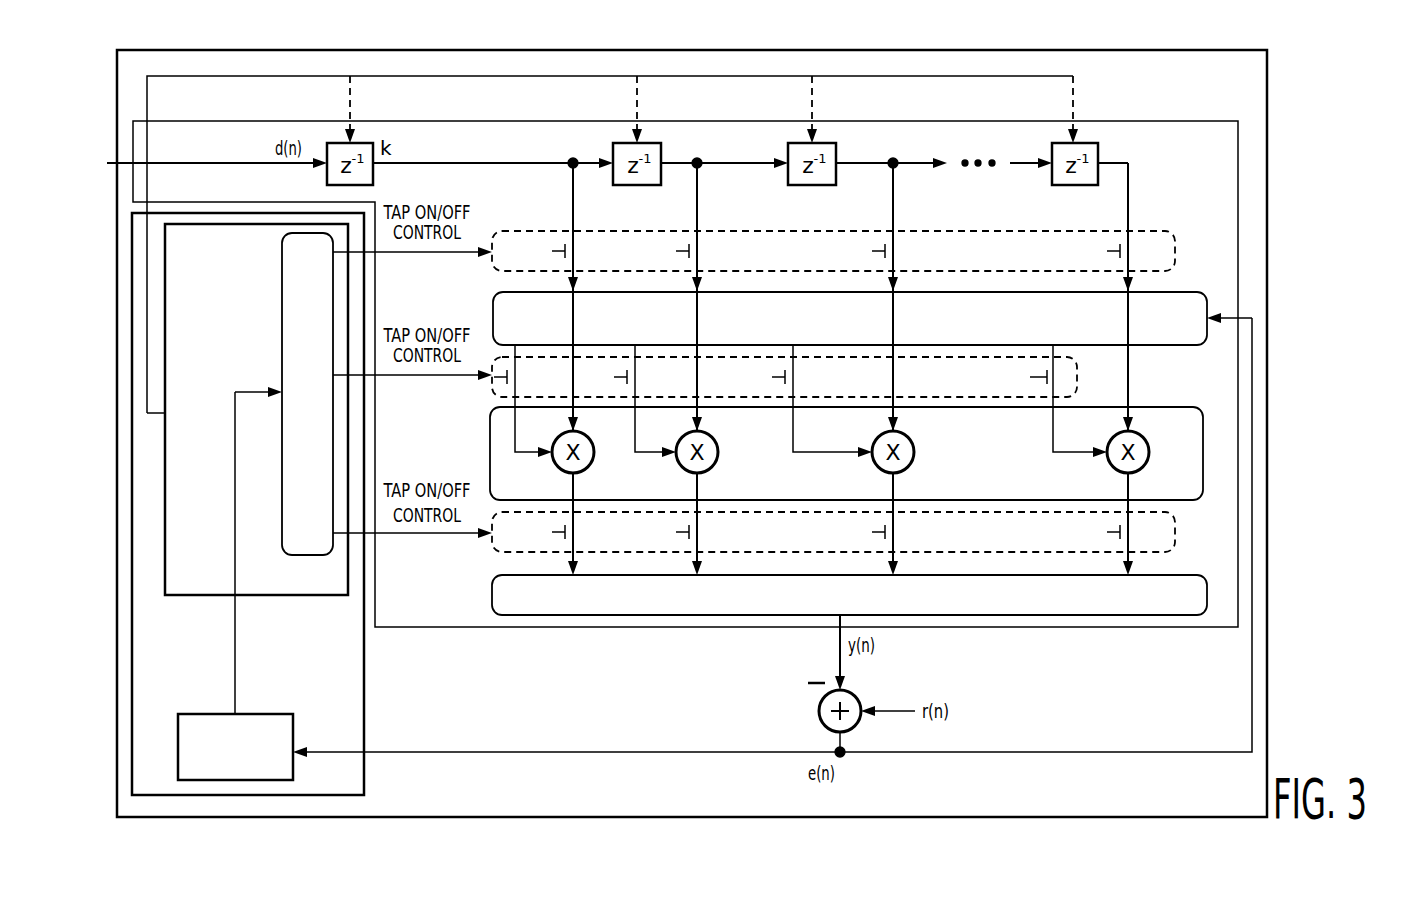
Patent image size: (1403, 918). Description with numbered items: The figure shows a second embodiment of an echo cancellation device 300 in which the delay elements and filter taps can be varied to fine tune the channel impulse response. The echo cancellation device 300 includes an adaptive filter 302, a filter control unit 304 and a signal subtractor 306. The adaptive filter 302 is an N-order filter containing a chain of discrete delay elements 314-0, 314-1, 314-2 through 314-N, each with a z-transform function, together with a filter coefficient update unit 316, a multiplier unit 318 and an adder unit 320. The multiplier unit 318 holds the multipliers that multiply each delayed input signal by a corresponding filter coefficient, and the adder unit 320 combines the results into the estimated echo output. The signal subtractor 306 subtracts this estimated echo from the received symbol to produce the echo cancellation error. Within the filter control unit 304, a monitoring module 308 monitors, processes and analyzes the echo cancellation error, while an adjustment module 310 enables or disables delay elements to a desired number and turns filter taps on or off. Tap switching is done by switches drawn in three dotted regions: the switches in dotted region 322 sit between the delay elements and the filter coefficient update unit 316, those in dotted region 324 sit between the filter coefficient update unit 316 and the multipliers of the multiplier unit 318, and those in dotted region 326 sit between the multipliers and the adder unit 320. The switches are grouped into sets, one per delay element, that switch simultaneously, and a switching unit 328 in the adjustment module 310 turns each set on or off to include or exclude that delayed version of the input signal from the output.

The echo cancellation device 300 is at (1267, 100).
The adaptive filter 302 is at (1153, 121).
The filter control unit 304 is at (363, 777).
The signal subtractor 306 is at (819, 704).
The monitoring module 308 is at (282, 714).
The adjustment module 310 is at (207, 576).
The delay element 314-0 is at (327, 178).
The delay element 314-1 is at (613, 150).
The delay element 314-2 is at (788, 152).
The delay element 314-N is at (1098, 150).
The filter coefficient update unit 316 is at (1180, 292).
The multiplier unit 318 is at (1180, 407).
The adder unit 320 is at (1190, 627).
The dotted region 322 is at (1150, 231).
The dotted region 324 is at (1077, 389).
The dotted region 326 is at (1175, 530).
The switching unit 328 is at (323, 399).